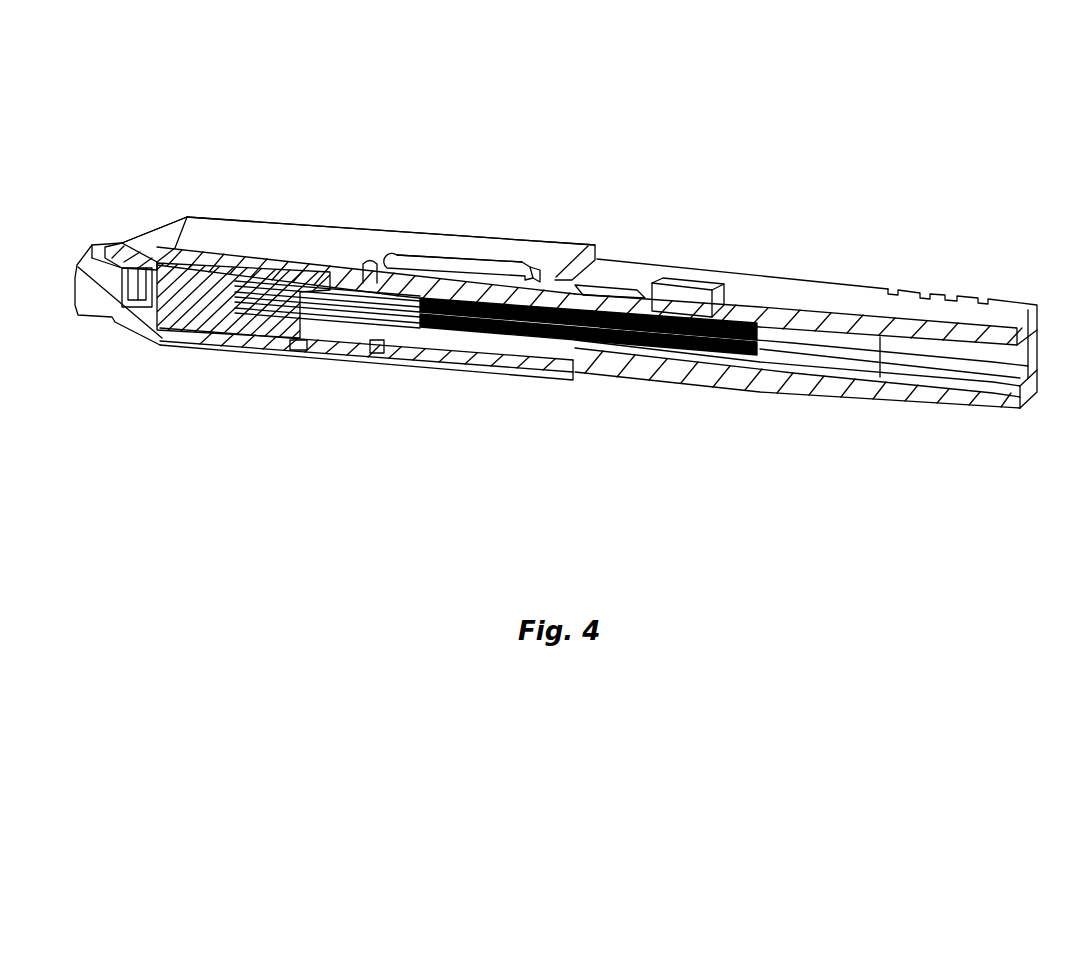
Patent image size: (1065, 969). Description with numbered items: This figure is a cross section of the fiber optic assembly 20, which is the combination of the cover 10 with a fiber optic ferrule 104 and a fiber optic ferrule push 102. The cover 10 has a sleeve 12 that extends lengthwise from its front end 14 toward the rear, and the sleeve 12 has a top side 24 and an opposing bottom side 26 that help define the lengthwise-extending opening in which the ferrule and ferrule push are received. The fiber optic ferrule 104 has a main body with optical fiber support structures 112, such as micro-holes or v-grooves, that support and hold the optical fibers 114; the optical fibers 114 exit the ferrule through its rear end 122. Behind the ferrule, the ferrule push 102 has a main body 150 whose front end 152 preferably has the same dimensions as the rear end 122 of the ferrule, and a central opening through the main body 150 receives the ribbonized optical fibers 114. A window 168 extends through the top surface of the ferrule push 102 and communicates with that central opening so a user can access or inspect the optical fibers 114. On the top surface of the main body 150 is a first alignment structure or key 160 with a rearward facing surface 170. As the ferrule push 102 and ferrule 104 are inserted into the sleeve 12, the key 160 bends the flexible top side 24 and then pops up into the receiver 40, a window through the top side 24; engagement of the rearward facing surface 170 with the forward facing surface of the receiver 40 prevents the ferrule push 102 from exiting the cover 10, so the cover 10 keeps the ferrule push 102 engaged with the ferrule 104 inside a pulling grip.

The cover 10 is at (283, 190).
The sleeve 12 is at (258, 220).
The front end 14 is at (68, 313).
The fiber optic assembly 20 is at (697, 138).
The top side 24 is at (208, 227).
The opposing bottom side 26 is at (467, 368).
The receiver 40 is at (458, 256).
The fiber optic ferrule push 102 is at (857, 398).
The fiber optic ferrule 104 is at (198, 315).
The optical fiber support structures 112 is at (301, 352).
The optical fibers 114 is at (681, 355).
The rear end 122 is at (360, 262).
The main body 150 is at (878, 297).
The front end 152 is at (372, 357).
The first alignment structure or key 160 is at (472, 263).
The window 168 is at (743, 290).
The rearward facing surface 170 is at (528, 266).